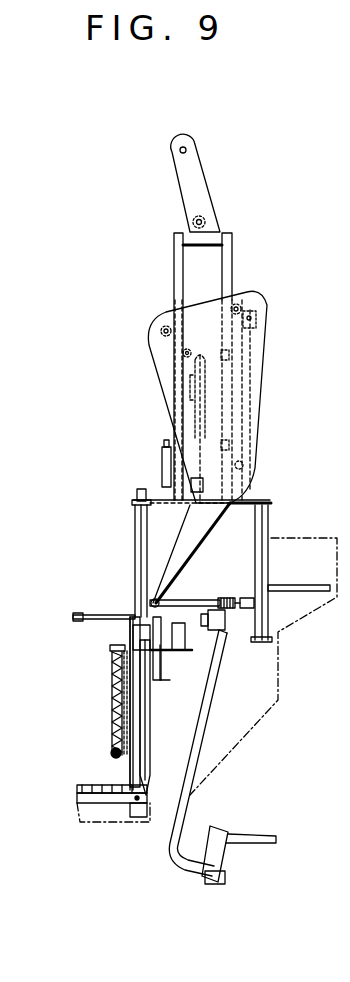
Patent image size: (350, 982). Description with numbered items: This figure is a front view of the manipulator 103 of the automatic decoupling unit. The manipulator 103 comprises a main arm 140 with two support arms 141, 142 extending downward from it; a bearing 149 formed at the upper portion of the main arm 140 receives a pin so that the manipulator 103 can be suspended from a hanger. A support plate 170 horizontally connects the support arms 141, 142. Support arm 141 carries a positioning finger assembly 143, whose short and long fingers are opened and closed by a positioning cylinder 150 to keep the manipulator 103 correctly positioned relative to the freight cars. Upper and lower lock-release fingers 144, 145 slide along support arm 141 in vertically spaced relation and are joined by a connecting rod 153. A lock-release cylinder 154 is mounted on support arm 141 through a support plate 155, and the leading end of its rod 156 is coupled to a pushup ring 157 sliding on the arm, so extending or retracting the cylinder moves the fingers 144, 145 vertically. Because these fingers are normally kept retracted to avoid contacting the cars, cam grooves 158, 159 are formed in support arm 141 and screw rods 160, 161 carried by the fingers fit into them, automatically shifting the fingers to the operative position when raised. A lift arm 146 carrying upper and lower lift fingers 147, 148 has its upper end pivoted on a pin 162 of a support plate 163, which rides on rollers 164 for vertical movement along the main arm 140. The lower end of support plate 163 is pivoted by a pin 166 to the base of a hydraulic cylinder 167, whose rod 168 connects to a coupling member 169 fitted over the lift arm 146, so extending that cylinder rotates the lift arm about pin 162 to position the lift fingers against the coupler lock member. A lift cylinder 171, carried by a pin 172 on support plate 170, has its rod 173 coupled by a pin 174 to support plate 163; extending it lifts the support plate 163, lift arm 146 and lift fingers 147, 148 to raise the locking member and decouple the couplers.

The manipulator 103 is at (259, 416).
The main arm 140 is at (174, 252).
The support arm 141 is at (138, 538).
The support arm 142 is at (265, 531).
The positioning finger assembly 143 is at (112, 751).
The lock-release finger 144 is at (95, 616).
The lock-release finger 145 is at (77, 792).
The lift arm 146 is at (218, 641).
The lift finger 147 is at (300, 585).
The lift finger 148 is at (252, 841).
The bearing 149 is at (205, 221).
The positioning cylinder 150 is at (112, 705).
The connecting rod 153 is at (158, 758).
The lock-release cylinder 154 is at (151, 737).
The support plate 155 is at (176, 662).
The rod 156 is at (175, 654).
The pushup ring 157 is at (118, 650).
The cam groove 158 is at (140, 577).
The cam groove 159 is at (130, 780).
The screw rod 160 is at (130, 638).
The screw rod 161 is at (137, 817).
The pin 162 is at (257, 313).
The support plate 163 is at (199, 308).
The rollers 164 is at (238, 300).
The pin 166 is at (150, 601).
The hydraulic cylinder 167 is at (198, 606).
The rod 168 is at (235, 597).
The coupling member 169 is at (256, 603).
The support plate 170 is at (136, 506).
The lift cylinder 171 is at (195, 468).
The pin 172 is at (191, 553).
The rod 173 is at (190, 378).
The pin 174 is at (205, 339).